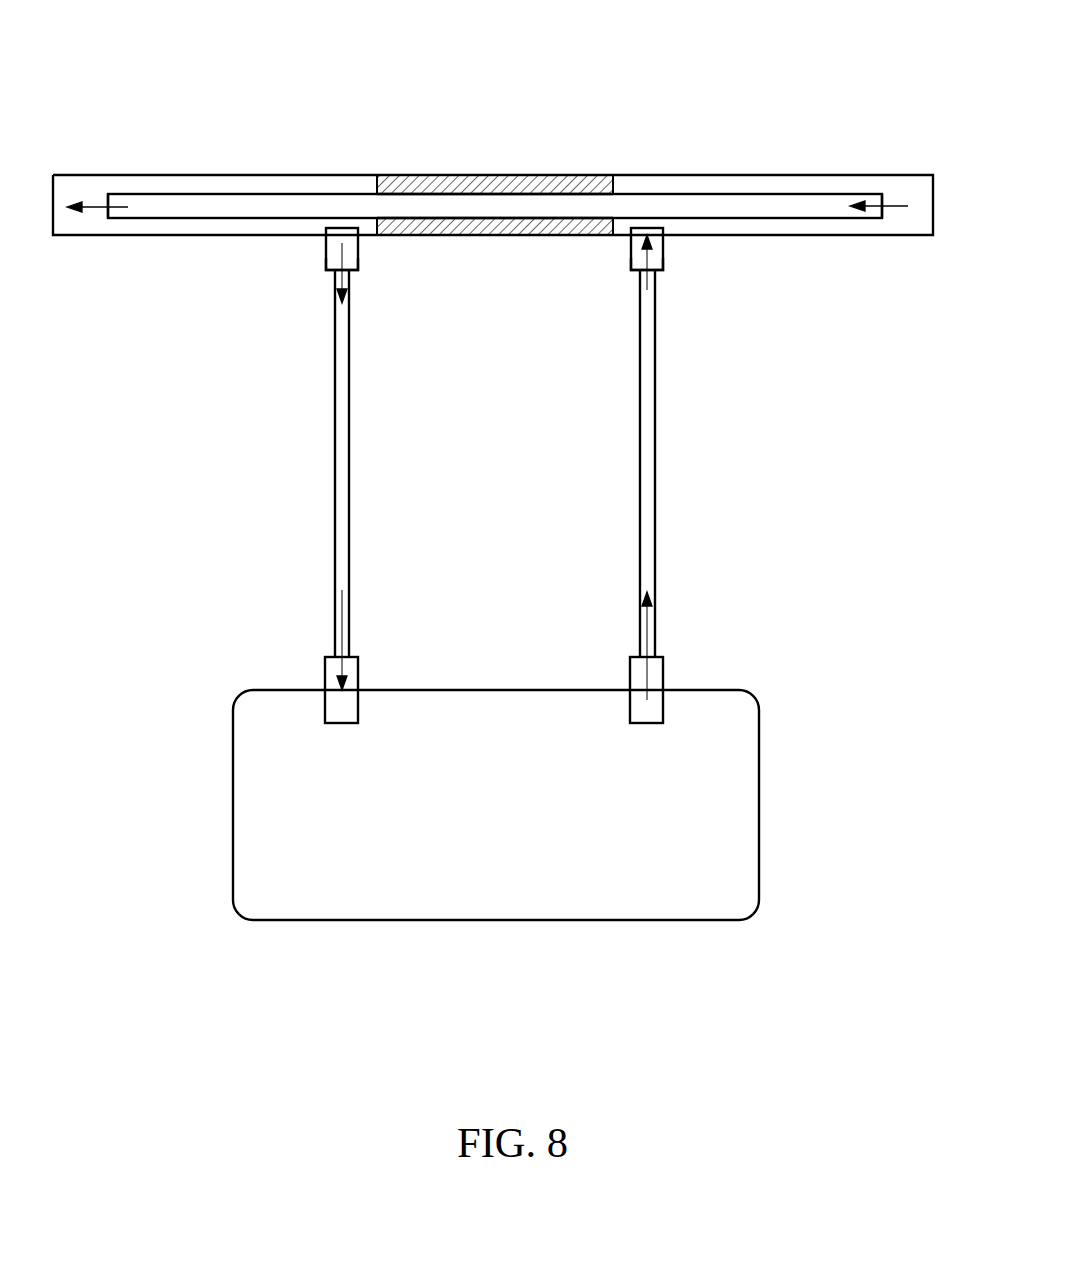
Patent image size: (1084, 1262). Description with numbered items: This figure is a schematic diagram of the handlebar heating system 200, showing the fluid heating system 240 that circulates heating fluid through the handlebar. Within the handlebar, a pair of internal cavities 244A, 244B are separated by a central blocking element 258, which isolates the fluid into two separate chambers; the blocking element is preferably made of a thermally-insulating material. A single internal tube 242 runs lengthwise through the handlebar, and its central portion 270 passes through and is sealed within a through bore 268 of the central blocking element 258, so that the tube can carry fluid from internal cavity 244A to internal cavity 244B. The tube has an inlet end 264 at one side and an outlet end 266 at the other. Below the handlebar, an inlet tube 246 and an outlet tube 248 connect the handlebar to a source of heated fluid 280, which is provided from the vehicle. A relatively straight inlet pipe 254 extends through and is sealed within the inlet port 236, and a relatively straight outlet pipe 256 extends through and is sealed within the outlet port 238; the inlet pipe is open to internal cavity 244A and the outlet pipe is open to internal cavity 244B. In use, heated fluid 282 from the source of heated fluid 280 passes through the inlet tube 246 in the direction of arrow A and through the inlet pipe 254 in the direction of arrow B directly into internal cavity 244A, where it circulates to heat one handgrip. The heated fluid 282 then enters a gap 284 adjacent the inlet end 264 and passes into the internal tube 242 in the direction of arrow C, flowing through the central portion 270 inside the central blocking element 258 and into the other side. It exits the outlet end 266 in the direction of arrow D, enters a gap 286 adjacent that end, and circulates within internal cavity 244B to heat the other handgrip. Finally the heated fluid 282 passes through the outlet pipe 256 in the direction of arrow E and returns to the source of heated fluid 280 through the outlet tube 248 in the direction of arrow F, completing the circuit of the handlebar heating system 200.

The handlebar heating system 200 is at (307, 58).
The fluid heating system 240 is at (747, 366).
The internal tube 242 is at (685, 195).
The internal cavity 244A is at (770, 182).
The internal cavity 244B is at (180, 180).
The inlet tube 246 is at (655, 423).
The outlet tube 248 is at (335, 423).
The inlet pipe 254 is at (665, 263).
The outlet pipe 256 is at (326, 260).
The central blocking element 258 is at (465, 232).
The inlet end 264 is at (887, 196).
The outlet end 266 is at (106, 197).
The through bore 268 is at (418, 199).
The central portion 270 is at (517, 208).
The source of heated fluid 280 is at (760, 807).
The heated fluid 282 is at (192, 230).
The gap 284 is at (917, 198).
The gap 286 is at (74, 197).
The inlet port 236 is at (665, 240).
The outlet port 238 is at (325, 238).
The arrow A is at (647, 620).
The arrow B is at (655, 286).
The arrow C is at (898, 209).
The arrow D is at (88, 210).
The arrow E is at (335, 283).
The arrow F is at (336, 622).